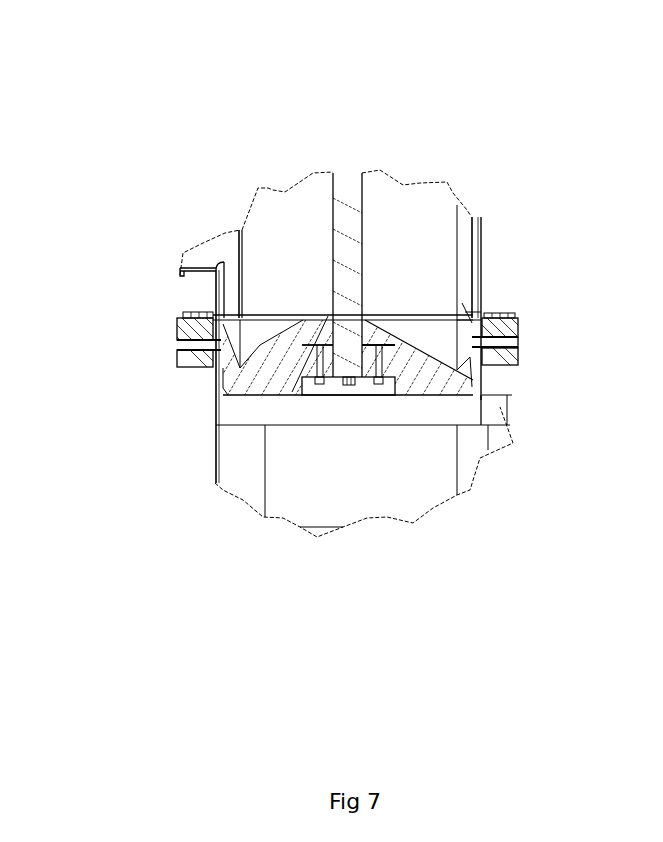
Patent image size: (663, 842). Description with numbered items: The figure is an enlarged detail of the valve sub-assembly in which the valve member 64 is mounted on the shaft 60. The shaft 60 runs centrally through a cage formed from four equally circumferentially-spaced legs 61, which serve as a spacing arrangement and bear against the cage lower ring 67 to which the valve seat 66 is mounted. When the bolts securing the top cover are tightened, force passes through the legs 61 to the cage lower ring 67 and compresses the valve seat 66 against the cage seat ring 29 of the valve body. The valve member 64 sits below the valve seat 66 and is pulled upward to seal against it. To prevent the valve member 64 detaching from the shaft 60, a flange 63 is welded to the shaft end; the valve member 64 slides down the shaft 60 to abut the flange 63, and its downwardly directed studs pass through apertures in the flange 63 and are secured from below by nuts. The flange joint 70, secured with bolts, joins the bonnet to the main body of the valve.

The shaft 60 is at (353, 200).
The legs 61 is at (238, 267).
The cage lower ring 67 is at (458, 310).
The valve seat 66 is at (480, 315).
The cage seat ring 29 is at (500, 345).
The flange joint 70 is at (177, 322).
The valve member 64 is at (278, 370).
The flange 63 is at (340, 388).